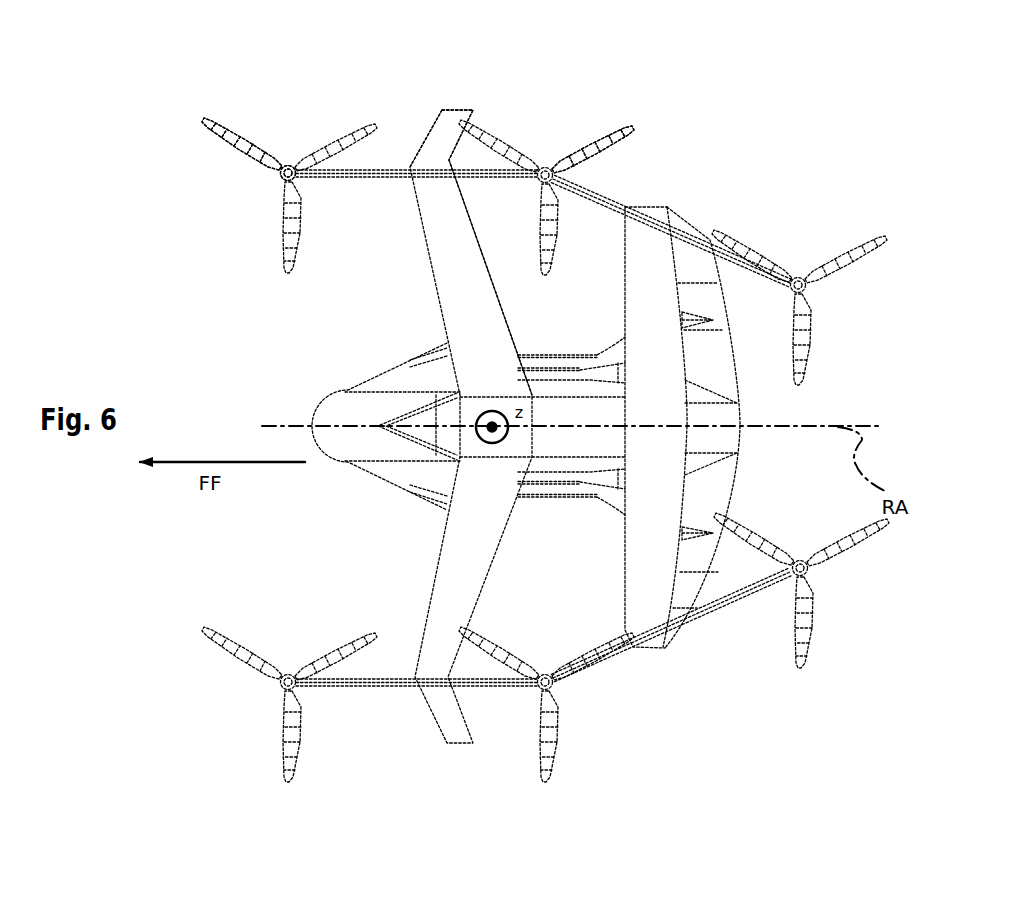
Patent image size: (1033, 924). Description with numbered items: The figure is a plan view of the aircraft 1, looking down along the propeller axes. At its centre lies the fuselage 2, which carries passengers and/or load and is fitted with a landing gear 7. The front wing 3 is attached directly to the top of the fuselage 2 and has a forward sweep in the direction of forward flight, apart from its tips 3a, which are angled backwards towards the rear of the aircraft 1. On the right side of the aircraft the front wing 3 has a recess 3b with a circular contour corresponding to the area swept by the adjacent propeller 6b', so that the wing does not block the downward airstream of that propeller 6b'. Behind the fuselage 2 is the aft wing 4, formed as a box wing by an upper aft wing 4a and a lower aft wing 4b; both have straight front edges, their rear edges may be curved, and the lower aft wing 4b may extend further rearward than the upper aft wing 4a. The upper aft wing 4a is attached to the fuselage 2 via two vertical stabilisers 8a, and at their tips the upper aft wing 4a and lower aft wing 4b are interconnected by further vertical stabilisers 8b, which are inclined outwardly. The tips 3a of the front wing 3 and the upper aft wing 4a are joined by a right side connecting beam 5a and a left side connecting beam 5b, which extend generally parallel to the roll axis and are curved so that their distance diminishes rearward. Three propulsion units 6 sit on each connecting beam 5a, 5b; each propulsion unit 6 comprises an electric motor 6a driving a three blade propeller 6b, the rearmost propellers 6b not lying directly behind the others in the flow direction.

The aircraft 1 is at (232, 322).
The fuselage 2 is at (370, 397).
The front wing 3 is at (480, 320).
The tips of front wing 3a is at (440, 148).
The recess 3b is at (453, 200).
The aft wing 4 is at (626, 317).
The upper aft wing 4a is at (645, 250).
The lower aft wing 4b is at (717, 358).
The right side connecting beam 5a is at (375, 173).
The left side connecting beam 5b is at (370, 678).
The propulsion unit 6 is at (288, 138).
The electric motor 6a is at (300, 180).
The three blade propeller 6b is at (234, 171).
The adjacent propeller 6b' is at (609, 113).
The landing gear 7 is at (553, 497).
The vertical stabilisers 8a is at (693, 323).
The further vertical stabilisers 8b is at (685, 252).